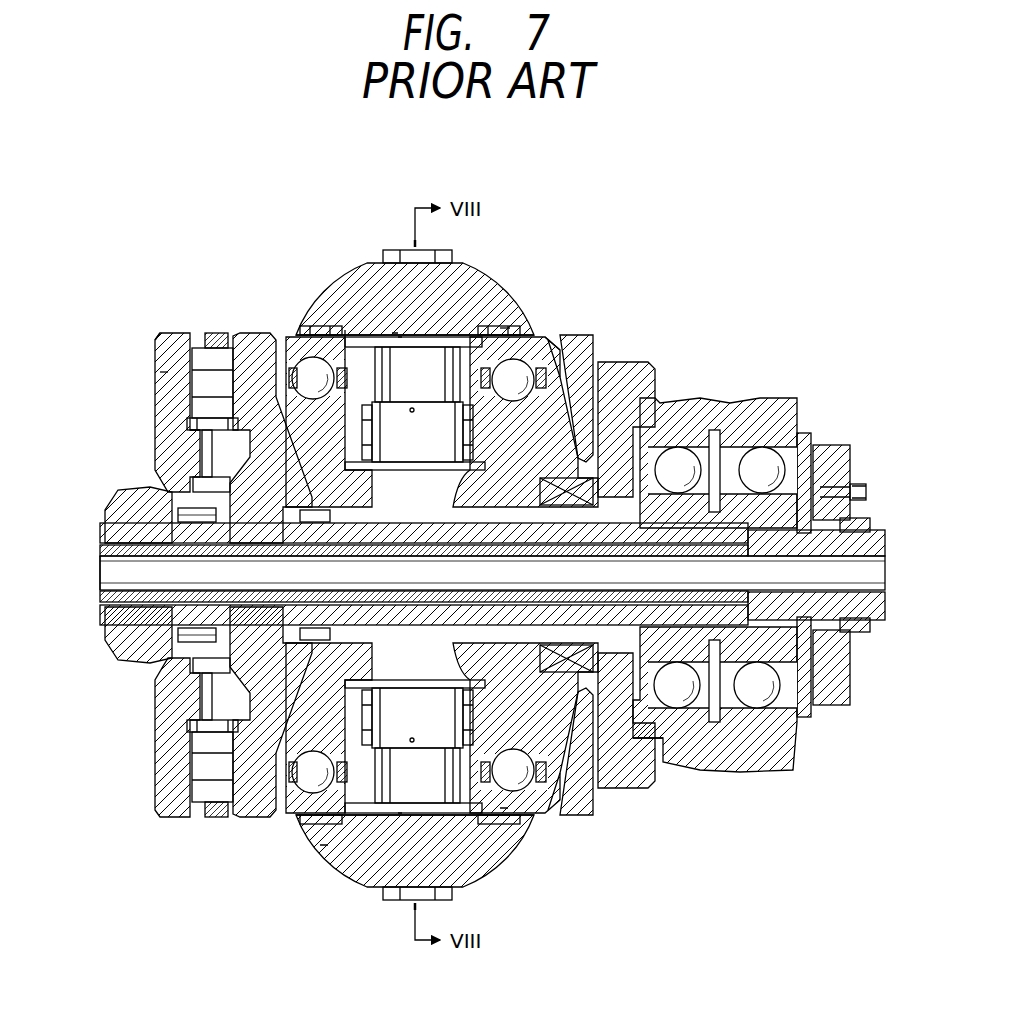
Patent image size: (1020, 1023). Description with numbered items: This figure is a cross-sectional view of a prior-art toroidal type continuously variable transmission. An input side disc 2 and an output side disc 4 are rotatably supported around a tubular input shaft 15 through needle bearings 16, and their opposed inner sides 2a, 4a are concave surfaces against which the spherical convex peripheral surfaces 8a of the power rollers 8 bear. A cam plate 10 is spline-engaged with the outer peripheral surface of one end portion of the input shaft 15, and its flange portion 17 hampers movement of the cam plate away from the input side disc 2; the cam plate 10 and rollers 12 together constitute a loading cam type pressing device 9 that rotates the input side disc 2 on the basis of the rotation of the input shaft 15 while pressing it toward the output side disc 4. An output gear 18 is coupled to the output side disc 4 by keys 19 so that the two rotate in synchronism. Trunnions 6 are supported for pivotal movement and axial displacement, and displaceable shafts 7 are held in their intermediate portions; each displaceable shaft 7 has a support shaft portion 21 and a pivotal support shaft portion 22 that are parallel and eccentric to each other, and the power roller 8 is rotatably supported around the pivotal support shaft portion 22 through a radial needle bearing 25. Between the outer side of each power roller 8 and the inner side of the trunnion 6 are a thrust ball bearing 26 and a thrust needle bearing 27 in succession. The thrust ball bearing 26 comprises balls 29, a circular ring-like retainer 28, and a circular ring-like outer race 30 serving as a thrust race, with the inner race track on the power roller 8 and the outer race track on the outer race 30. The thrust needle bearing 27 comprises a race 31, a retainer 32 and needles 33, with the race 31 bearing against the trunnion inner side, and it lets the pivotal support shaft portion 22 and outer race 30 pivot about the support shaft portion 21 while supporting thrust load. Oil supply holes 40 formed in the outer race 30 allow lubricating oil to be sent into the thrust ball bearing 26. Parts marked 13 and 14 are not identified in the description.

The input side disc 2 is at (250, 334).
The inner side of input side disc 2a is at (190, 558).
The output side disc 4 is at (590, 340).
The inner side of output side disc 4a is at (680, 417).
The trunnion 6 is at (472, 268).
The displaceable shaft 7 is at (485, 330).
The power roller 8 is at (202, 460).
The peripheral surface of power roller 8a is at (160, 440).
The loading cam type pressing device 9 is at (160, 374).
The cam plate 10 is at (170, 336).
The roller 12 is at (205, 348).
The housing edge 13 is at (158, 340).
The pin 14 is at (214, 334).
The tubular input shaft 15 is at (876, 548).
The needle bearing 16 is at (455, 508).
The flange portion 17 is at (110, 500).
The output gear 18 is at (658, 370).
The key 19 is at (570, 505).
The support shaft portion 21 is at (405, 252).
The pivotal support shaft portion 22 is at (400, 336).
The radial needle bearing 25 is at (458, 445).
The thrust ball bearing 26 is at (528, 375).
The thrust needle bearing 27 is at (528, 358).
The retainer 28 is at (556, 380).
The ball 29 is at (222, 398).
The outer race 30 is at (300, 340).
The race 31 is at (345, 333).
The retainer 32 is at (502, 326).
The needle 33 is at (320, 327).
The oil supply hole 40 is at (395, 333).